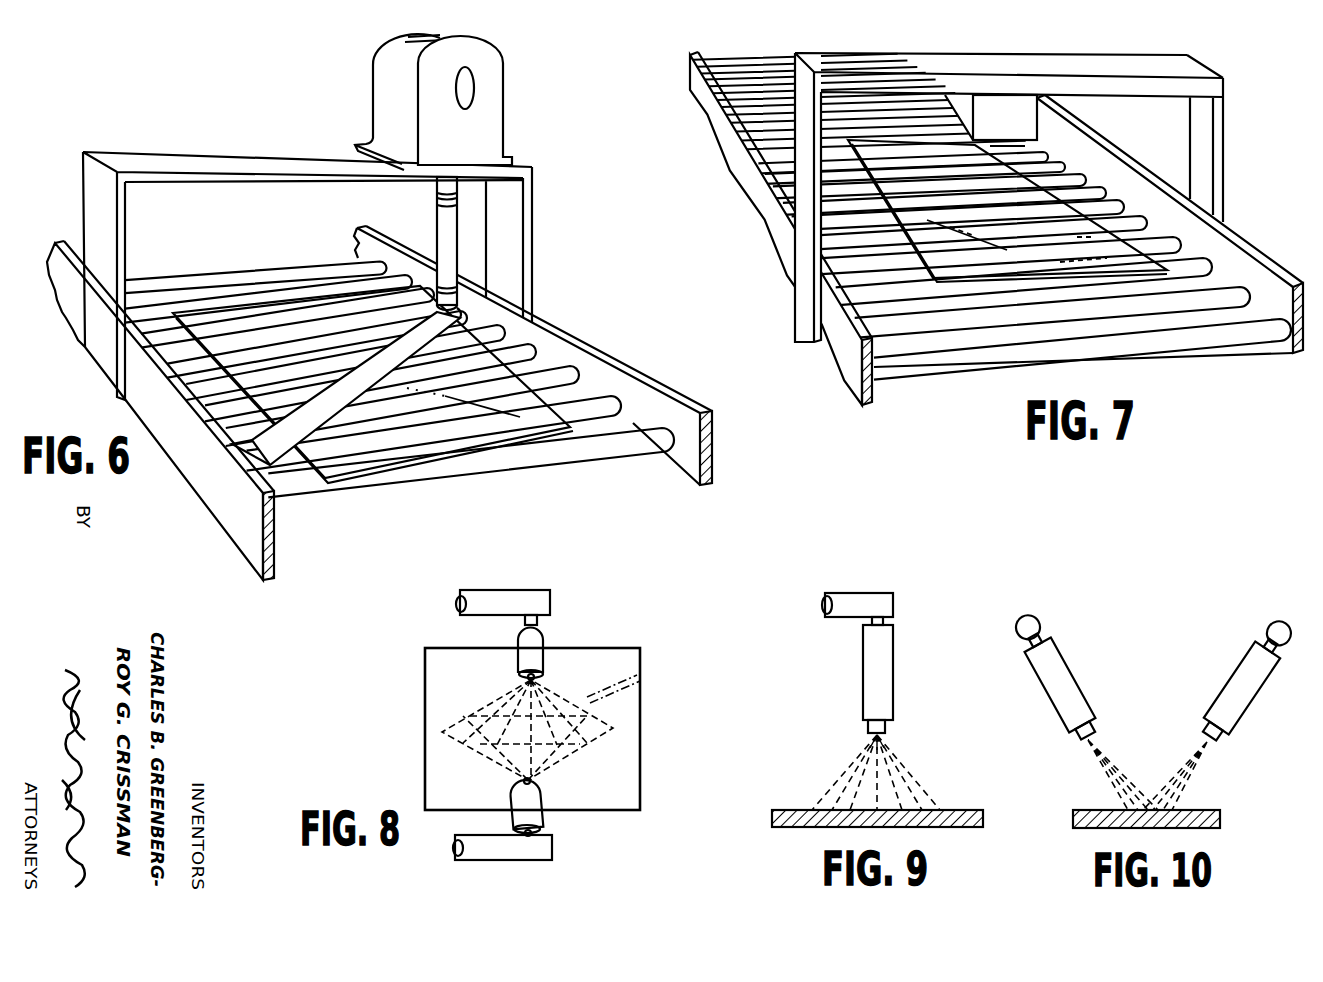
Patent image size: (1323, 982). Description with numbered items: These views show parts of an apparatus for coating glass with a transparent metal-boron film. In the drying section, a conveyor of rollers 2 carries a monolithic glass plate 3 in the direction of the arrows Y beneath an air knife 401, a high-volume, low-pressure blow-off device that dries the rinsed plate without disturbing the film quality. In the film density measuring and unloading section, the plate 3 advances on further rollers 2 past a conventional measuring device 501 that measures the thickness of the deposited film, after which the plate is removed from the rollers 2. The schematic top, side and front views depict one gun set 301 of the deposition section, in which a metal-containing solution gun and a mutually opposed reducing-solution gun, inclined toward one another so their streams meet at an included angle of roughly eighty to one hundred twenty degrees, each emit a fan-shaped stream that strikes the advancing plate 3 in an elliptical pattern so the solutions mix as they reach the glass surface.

In FIG. 6, the rollers 2 is at (312, 513).
In FIG. 7, the rollers 2 is at (905, 358).
In FIG. 6, the monolithic glass plates 3 is at (353, 452).
In FIG. 7, the monolithic glass plates 3 is at (1105, 229).
In FIG. 8, the monolithic glass plates 3 is at (632, 783).
In FIG. 9, the monolithic glass plates 3 is at (780, 810).
In FIG. 10, the monolithic glass plates 3 is at (1088, 810).
In FIG. 8, the gun set 301 is at (568, 843).
In FIG. 10, the gun set 301 is at (1263, 626).
In FIG. 6, the air knife 401 is at (350, 357).
In FIG. 7, the measuring device 501 is at (991, 120).
In FIG. 6, the arrows indicating direction of travel Y is at (425, 435).
In FIG. 7, the arrows indicating direction of travel Y is at (1036, 245).
In FIG. 8, the arrows indicating direction of travel Y is at (624, 712).
In FIG. 9, the arrows indicating direction of travel Y is at (945, 799).